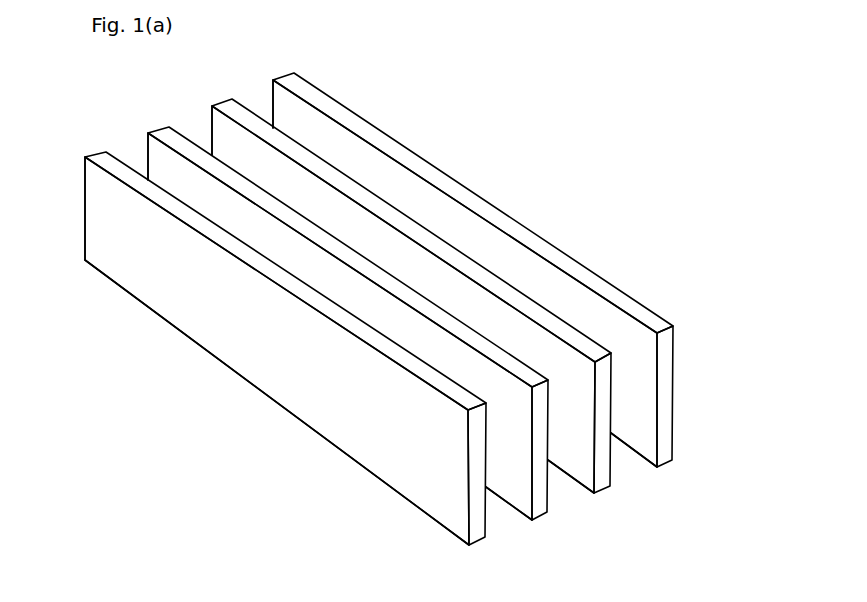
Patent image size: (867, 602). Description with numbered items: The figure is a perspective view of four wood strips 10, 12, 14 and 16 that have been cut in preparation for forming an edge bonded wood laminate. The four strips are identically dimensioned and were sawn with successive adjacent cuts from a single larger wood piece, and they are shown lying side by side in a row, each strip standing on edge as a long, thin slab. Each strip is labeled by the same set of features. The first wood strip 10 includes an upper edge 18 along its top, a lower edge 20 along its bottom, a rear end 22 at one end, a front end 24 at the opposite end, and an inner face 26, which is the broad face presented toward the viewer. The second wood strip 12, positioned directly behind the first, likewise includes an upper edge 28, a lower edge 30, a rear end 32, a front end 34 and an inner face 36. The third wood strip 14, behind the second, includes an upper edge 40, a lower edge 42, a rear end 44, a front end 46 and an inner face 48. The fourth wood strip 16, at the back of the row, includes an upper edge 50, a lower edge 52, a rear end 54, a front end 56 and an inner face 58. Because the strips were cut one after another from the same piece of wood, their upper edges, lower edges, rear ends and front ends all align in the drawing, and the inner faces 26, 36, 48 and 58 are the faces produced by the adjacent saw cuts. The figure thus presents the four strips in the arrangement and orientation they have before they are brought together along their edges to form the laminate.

The wood strip 10 is at (265, 353).
The wood strip 12 is at (332, 343).
The wood strip 14 is at (398, 319).
The wood strip 16 is at (469, 294).
The upper edge 18 is at (230, 245).
The lower edge 20 is at (423, 516).
The rear end 22 is at (85, 210).
The front end 24 is at (477, 526).
The inner face 26 is at (332, 373).
The upper edge 28 is at (280, 210).
The lower edge 30 is at (515, 513).
The rear end 32 is at (148, 144).
The front end 34 is at (540, 510).
The inner face 36 is at (408, 329).
The upper edge 40 is at (345, 182).
The lower edge 42 is at (572, 483).
The rear end 44 is at (210, 116).
The front end 46 is at (603, 473).
The inner face 48 is at (489, 315).
The upper edge 50 is at (397, 157).
The lower edge 52 is at (633, 457).
The rear end 54 is at (273, 102).
The front end 56 is at (663, 443).
The inner face 58 is at (548, 282).